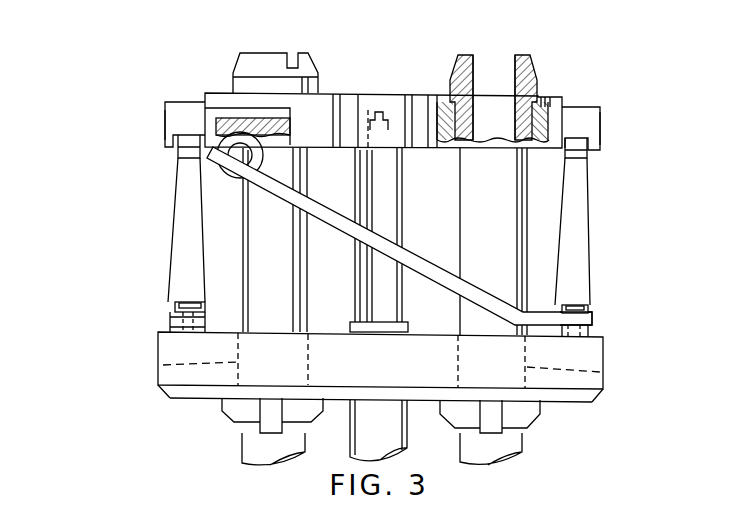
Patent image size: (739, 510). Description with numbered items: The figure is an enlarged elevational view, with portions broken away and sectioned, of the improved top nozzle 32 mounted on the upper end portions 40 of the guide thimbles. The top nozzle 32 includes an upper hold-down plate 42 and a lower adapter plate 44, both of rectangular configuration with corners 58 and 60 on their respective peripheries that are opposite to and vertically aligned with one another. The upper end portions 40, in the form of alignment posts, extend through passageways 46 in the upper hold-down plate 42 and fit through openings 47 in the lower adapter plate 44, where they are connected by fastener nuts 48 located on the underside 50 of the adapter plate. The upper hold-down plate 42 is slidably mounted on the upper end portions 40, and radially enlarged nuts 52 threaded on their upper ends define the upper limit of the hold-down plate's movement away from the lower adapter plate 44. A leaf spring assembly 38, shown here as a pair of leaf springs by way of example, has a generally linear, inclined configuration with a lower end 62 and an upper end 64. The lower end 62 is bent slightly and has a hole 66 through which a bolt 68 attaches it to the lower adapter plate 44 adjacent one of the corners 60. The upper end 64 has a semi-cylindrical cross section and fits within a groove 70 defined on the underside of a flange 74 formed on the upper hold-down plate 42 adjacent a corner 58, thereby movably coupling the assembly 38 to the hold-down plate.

The top nozzle 32 is at (141, 124).
The leaf spring assembly 38 is at (171, 233).
The upper end portions of the guide thimbles 40 is at (478, 178).
The upper hold-down plate 42 is at (604, 141).
The lower adapter plate 44 is at (607, 356).
The passageways 46 is at (517, 127).
The openings 47 is at (158, 365).
The fastener nuts 48 is at (250, 408).
The underside of the lower adapter plate 50 is at (198, 401).
The radially enlarged nuts 52 is at (316, 64).
The corners of the upper hold-down plate 58 is at (190, 102).
The corners of the lower adapter plate 60 is at (157, 384).
The lower end of the leaf spring assembly 62 is at (594, 320).
The upper end of the leaf spring assembly 64 is at (222, 164).
The hole 66 is at (157, 327).
The bolt 68 is at (180, 300).
The groove 70 is at (289, 148).
The flange 74 is at (163, 118).